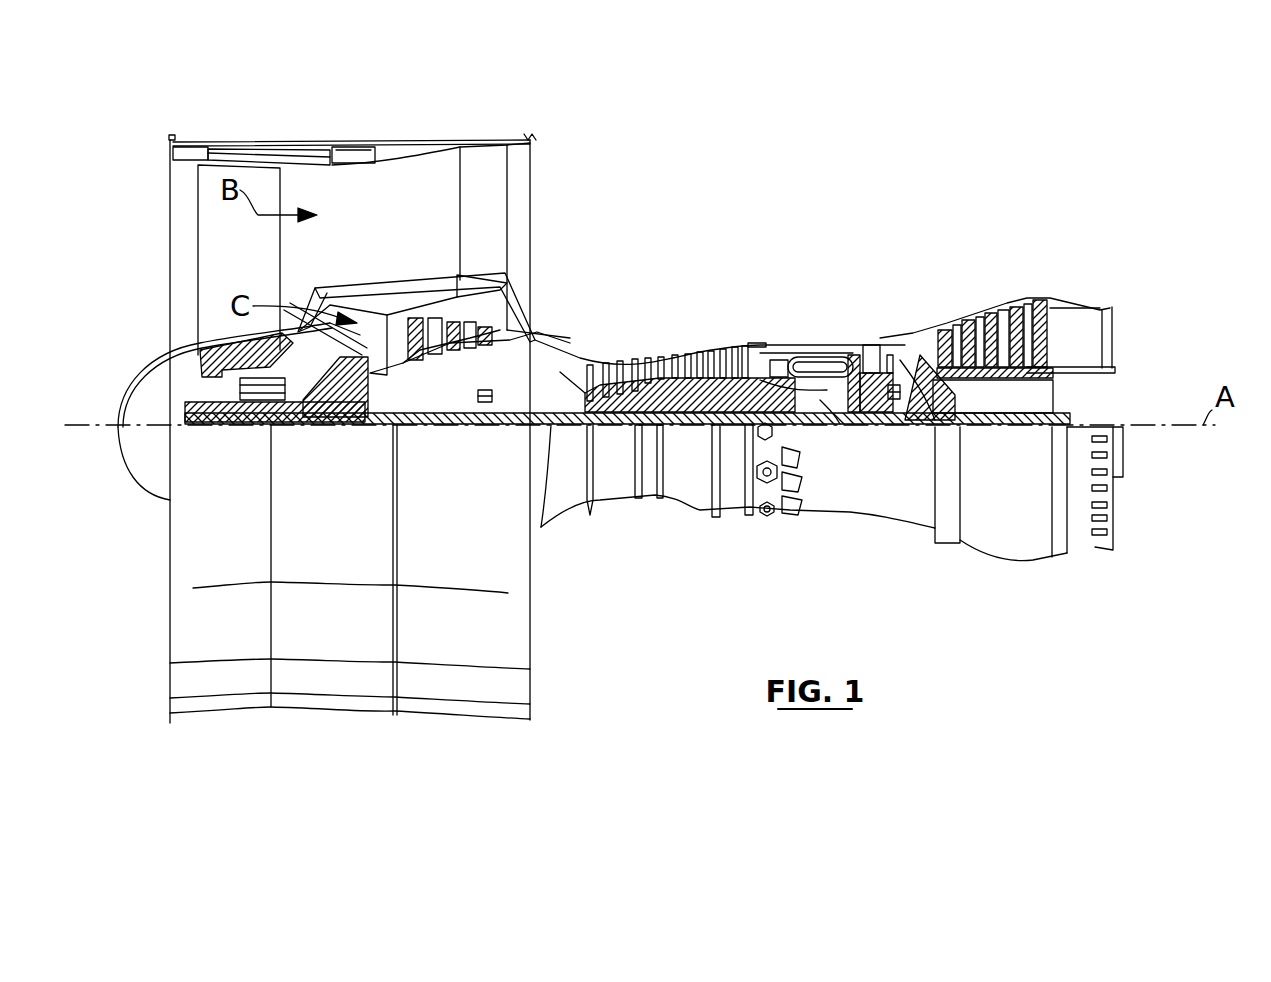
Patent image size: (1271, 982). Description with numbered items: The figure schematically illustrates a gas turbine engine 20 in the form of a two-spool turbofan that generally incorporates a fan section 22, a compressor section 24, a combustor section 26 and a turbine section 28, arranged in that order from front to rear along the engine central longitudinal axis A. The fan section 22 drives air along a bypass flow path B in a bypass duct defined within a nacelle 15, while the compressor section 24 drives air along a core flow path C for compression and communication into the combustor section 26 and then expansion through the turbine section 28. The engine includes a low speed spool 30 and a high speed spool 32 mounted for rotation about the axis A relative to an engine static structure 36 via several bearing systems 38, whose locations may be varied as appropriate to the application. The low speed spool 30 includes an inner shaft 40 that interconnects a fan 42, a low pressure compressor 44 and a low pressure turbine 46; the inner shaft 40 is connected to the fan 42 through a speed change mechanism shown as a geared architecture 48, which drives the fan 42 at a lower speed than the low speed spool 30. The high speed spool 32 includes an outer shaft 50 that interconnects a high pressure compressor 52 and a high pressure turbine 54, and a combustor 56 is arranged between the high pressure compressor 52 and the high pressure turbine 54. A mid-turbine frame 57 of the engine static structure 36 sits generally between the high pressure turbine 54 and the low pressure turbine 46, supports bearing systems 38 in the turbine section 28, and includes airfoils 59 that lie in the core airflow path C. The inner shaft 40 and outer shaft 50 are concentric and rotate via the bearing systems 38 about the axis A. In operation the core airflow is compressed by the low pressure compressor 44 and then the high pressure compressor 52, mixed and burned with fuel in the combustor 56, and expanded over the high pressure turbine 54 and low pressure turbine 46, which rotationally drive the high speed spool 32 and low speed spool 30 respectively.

The nacelle 15 is at (355, 148).
The gas turbine engine 20 is at (812, 190).
The fan section 22 is at (280, 131).
The compressor section 24 is at (580, 333).
The combustor section 26 is at (805, 321).
The turbine section 28 is at (951, 285).
The low speed spool 30 is at (690, 432).
The high speed spool 32 is at (736, 358).
The engine static structure 36 is at (730, 515).
The bearing systems 38 is at (487, 425).
The inner shaft 40 is at (553, 428).
The fan 42 is at (256, 270).
The low pressure compressor 44 is at (455, 335).
The low pressure turbine 46 is at (1001, 320).
The geared architecture 48 is at (358, 410).
The outer shaft 50 is at (822, 426).
The high pressure compressor 52 is at (660, 400).
The high pressure turbine 54 is at (871, 343).
The combustor 56 is at (805, 367).
The mid-turbine frame 57 is at (912, 336).
The airfoils 59 is at (950, 385).